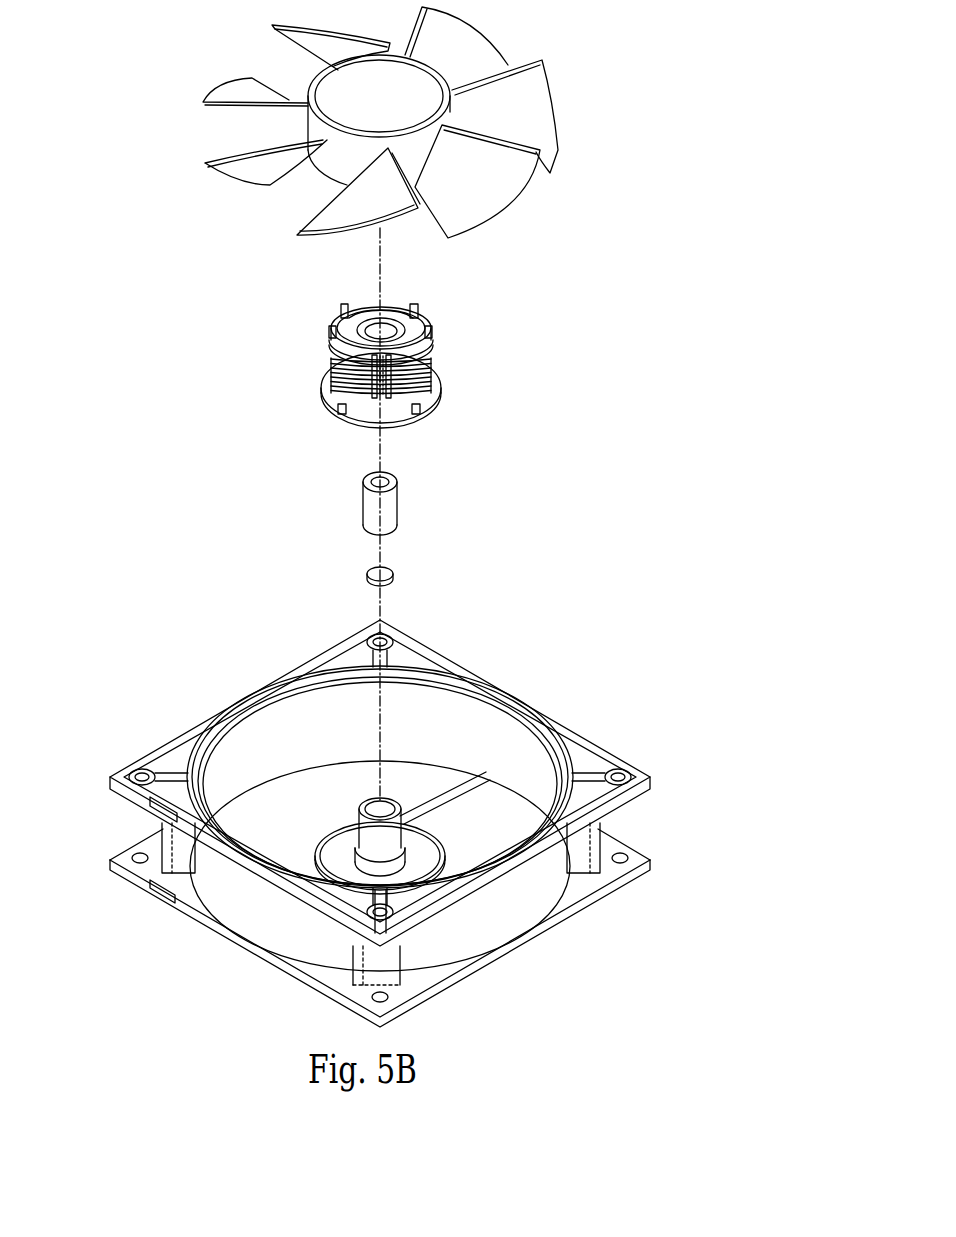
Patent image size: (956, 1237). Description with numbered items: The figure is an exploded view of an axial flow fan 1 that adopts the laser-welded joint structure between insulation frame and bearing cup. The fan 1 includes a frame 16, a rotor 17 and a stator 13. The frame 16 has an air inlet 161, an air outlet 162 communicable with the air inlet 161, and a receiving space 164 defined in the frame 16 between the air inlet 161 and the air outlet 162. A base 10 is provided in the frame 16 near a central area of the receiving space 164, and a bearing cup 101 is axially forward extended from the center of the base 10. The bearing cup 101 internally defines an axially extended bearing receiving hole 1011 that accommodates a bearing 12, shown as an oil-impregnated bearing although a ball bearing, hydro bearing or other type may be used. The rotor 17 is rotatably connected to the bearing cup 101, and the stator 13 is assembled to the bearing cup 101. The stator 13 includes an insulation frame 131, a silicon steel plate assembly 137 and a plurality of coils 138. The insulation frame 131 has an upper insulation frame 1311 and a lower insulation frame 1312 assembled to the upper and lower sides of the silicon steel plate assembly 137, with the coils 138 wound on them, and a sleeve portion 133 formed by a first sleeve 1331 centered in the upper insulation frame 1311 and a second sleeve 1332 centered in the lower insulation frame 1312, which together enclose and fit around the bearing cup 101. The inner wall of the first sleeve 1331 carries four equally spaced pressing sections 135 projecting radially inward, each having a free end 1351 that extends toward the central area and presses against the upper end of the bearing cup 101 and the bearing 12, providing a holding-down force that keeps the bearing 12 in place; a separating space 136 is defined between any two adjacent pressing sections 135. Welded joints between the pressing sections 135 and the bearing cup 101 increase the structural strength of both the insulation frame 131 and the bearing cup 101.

The fan 1 is at (672, 44).
The base 10 is at (313, 852).
The bearing cup 101 is at (397, 827).
The bearing receiving hole 1011 is at (372, 806).
The bearing 12 is at (372, 492).
The stator 13 is at (258, 307).
The insulation frame 131 is at (555, 345).
The upper insulation frame 1311 is at (420, 358).
The lower insulation frame 1312 is at (417, 397).
The sleeve portion 133 is at (198, 347).
The first sleeve 1331 is at (333, 323).
The second sleeve 1332 is at (377, 393).
The pressing section 135 is at (379, 318).
The free end 1351 is at (387, 318).
The separating space 136 is at (338, 308).
The silicon steel plate assembly 137 is at (403, 397).
The coils 138 is at (423, 326).
The frame 16 is at (597, 760).
The air inlet 161 is at (482, 710).
The air outlet 162 is at (518, 951).
The receiving space 164 is at (270, 718).
The rotor 17 is at (337, 97).